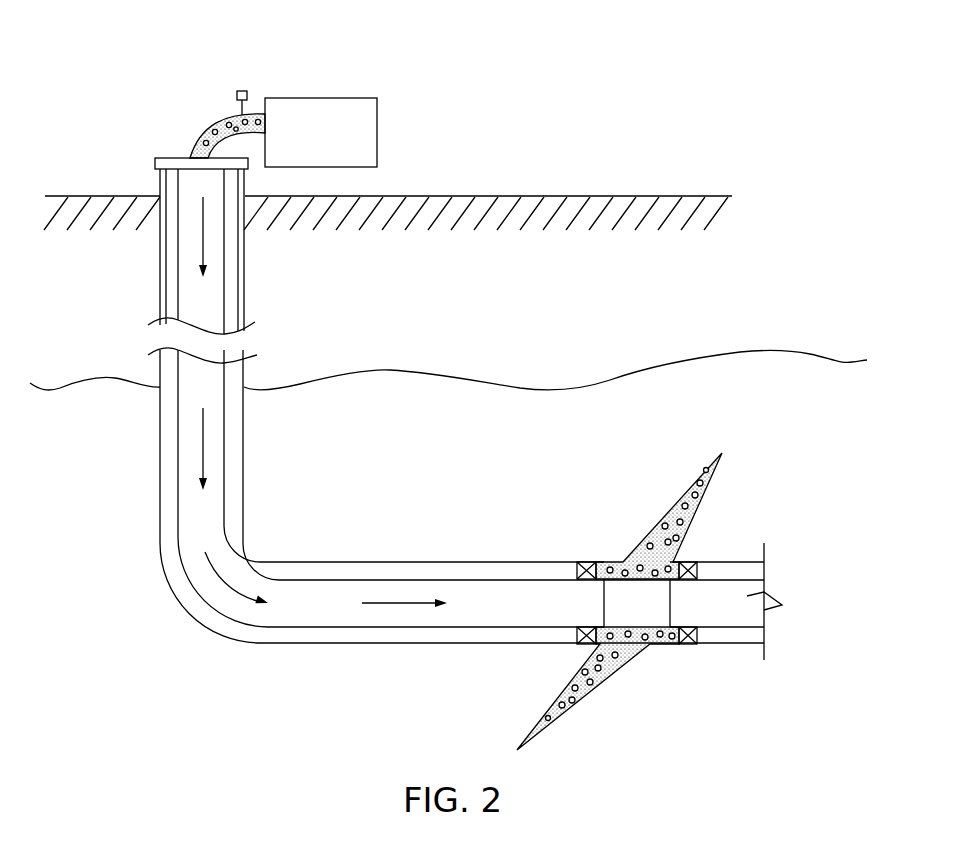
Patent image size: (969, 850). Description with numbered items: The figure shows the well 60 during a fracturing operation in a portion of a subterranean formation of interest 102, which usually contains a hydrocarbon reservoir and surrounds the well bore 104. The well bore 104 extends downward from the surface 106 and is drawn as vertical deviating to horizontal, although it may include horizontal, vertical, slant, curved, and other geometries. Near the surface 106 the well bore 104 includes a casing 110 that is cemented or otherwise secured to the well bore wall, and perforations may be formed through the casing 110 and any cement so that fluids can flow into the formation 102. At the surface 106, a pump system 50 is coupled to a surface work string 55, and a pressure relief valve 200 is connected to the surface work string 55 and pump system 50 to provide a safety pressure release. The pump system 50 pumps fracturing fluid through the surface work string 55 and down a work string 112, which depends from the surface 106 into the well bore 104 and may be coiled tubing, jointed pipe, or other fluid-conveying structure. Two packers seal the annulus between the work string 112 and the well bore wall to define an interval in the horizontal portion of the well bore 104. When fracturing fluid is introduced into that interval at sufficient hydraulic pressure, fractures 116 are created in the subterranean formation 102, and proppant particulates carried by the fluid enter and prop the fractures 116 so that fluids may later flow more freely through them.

The surface work string 55 is at (216, 44).
The pump system 50 is at (322, 98).
The pressure relief valve 200 is at (243, 90).
The surface 106 is at (545, 196).
The well bore 104 is at (172, 278).
The casing 110 is at (167, 298).
The work string 112 is at (178, 487).
The well 60 is at (190, 634).
The subterranean formation 102 is at (457, 442).
The fractures 116 is at (667, 495).